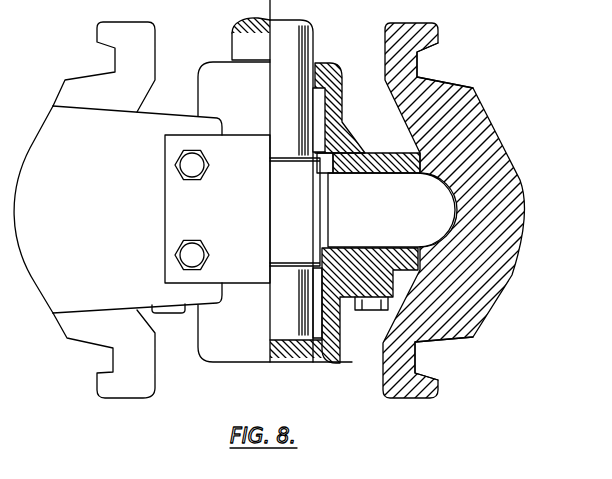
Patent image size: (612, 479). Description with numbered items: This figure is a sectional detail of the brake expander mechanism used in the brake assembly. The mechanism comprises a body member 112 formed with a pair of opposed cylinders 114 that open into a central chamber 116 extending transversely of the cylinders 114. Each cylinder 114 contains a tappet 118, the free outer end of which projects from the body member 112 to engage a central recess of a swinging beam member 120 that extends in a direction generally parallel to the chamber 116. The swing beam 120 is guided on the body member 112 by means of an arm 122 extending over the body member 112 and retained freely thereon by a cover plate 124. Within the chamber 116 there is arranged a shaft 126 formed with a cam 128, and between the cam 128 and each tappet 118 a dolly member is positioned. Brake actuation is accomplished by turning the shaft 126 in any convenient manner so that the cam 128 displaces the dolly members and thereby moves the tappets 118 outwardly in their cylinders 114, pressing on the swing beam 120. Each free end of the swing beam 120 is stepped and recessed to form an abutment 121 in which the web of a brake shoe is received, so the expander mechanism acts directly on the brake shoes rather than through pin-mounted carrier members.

The body member 112 is at (198, 345).
The cylinder 114 is at (362, 150).
The central chamber 116 is at (318, 357).
The tappet 118 is at (395, 190).
The swinging beam member 120 is at (503, 281).
The abutment 121 is at (416, 64).
The arm 122 is at (92, 234).
The cover plate 124 is at (243, 207).
The shaft 126 is at (240, 48).
The cam 128 is at (307, 232).